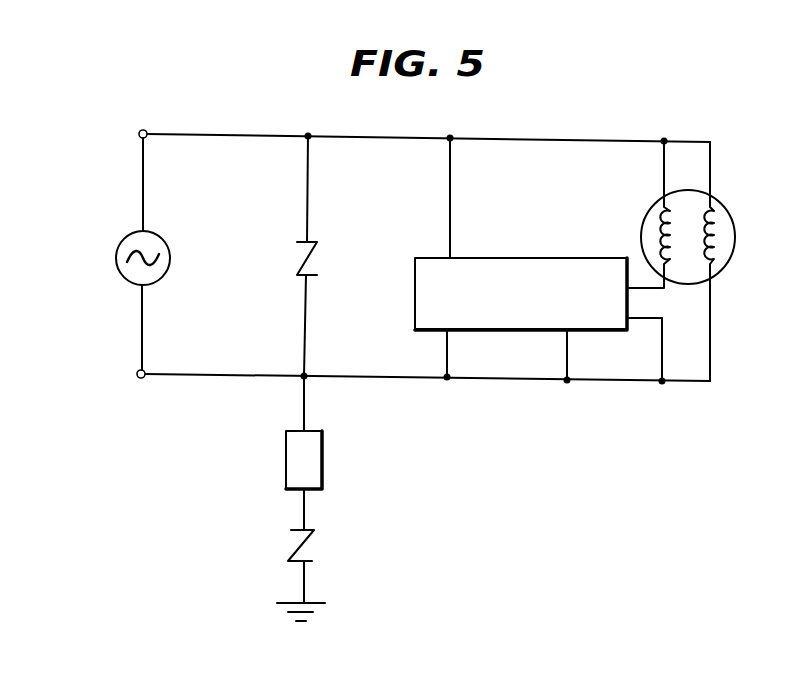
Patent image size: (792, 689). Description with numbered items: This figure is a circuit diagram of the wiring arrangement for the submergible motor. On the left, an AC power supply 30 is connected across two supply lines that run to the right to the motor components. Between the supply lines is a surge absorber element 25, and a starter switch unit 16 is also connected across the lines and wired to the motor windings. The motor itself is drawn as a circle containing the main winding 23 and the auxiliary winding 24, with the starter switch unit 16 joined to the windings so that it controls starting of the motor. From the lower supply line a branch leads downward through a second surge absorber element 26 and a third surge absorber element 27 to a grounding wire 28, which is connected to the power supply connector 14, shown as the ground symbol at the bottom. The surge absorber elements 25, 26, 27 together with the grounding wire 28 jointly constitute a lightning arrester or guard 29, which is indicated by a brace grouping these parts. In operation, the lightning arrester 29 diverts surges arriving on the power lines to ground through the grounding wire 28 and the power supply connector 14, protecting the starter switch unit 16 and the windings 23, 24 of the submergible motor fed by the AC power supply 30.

The AC power supply 30 is at (118, 276).
The surge absorber element 25 is at (298, 262).
The starter switch unit 16 is at (540, 258).
The main winding 23 is at (722, 229).
The auxiliary winding 24 is at (672, 240).
The surge absorber element 26 is at (323, 457).
The surge absorber element 27 is at (313, 546).
The grounding wire 28 is at (306, 585).
The power supply connector 14 is at (331, 621).
The lightning arrester 29 is at (359, 513).